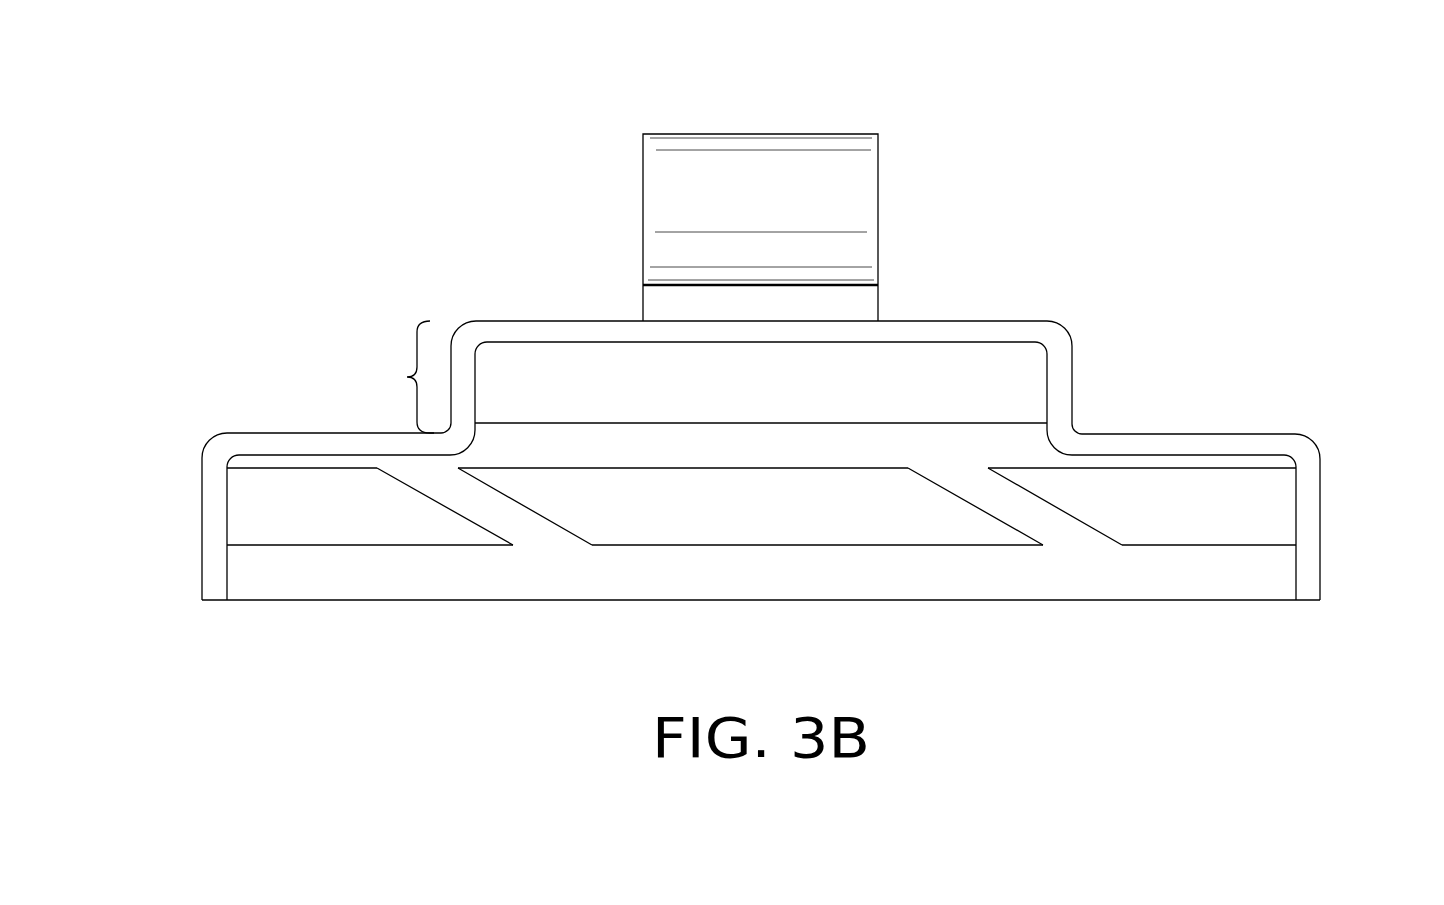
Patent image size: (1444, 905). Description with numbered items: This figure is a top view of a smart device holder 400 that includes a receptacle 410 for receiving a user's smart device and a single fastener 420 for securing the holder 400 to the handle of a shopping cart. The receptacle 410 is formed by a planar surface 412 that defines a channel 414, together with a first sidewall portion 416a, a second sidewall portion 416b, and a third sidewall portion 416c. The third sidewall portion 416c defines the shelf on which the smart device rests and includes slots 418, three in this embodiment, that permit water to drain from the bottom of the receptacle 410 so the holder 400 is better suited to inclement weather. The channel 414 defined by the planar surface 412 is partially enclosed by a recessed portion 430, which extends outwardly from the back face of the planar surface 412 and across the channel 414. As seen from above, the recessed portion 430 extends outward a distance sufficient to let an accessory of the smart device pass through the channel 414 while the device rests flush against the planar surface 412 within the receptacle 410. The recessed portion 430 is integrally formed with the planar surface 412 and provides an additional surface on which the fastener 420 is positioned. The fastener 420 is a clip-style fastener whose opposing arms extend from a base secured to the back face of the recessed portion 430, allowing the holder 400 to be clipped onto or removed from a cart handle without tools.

The smart device holder 400 is at (378, 123).
The receptacle 410 is at (280, 432).
The planar surface 412 is at (1192, 442).
The channel 414 is at (988, 424).
The first sidewall portion 416a is at (1310, 530).
The second sidewall portion 416b is at (210, 564).
The third sidewall portion 416c is at (793, 580).
The slots 418 is at (1152, 513).
The fastener 420 is at (879, 158).
The recessed portion 430 is at (407, 377).